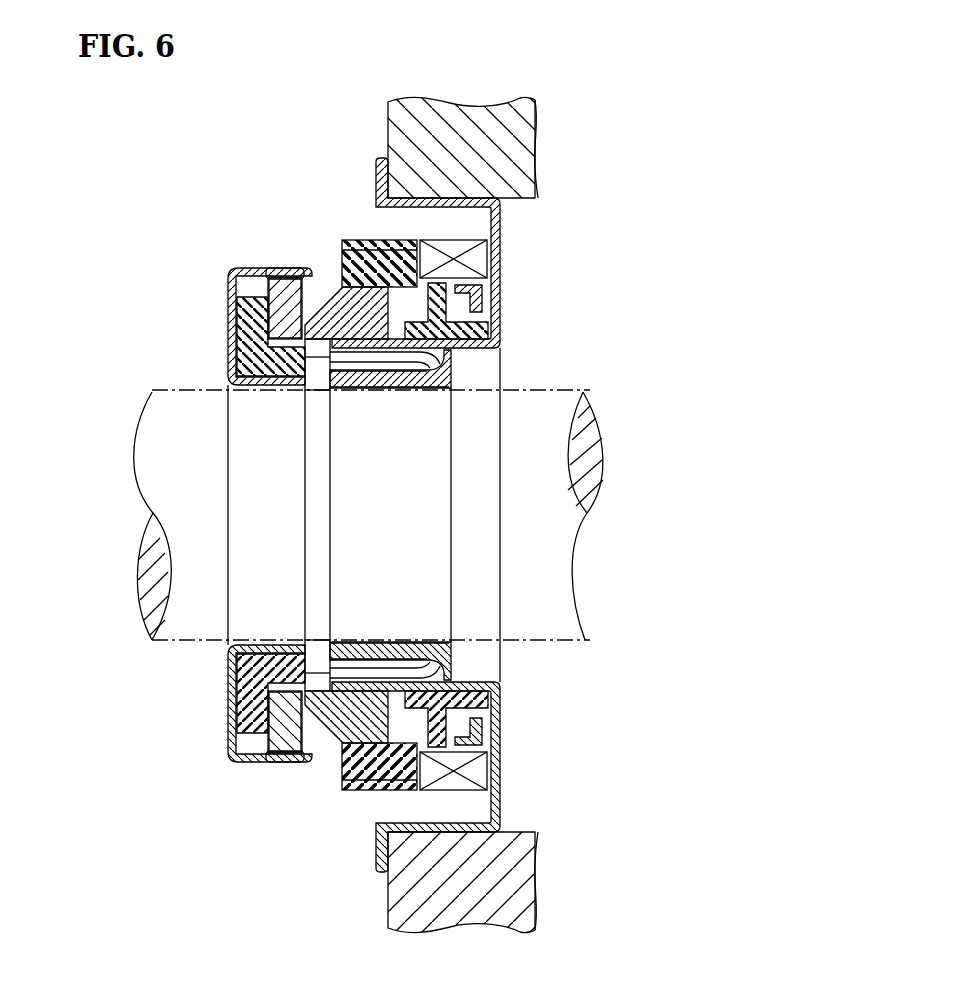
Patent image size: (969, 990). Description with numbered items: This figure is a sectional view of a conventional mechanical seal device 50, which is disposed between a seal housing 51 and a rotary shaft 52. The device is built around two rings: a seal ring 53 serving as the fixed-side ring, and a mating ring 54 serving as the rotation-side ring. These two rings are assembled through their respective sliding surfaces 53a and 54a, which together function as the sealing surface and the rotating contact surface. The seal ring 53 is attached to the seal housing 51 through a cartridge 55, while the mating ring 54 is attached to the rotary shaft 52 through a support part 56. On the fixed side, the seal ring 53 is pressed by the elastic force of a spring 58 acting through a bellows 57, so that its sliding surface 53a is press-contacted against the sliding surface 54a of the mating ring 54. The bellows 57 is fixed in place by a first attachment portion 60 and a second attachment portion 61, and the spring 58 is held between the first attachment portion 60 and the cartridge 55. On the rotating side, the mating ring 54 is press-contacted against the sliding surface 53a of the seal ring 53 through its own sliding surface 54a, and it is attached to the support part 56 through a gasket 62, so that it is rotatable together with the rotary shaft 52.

The mechanical seal device 50 is at (192, 241).
The seal housing 51 is at (528, 146).
The rotary shaft 52 is at (572, 570).
The seal ring 53 is at (322, 300).
The sliding surface 53a is at (300, 730).
The mating ring 54 is at (290, 292).
The sliding surface 54a is at (300, 772).
The cartridge 55 is at (500, 222).
The support part 56 is at (240, 296).
The bellows 57 is at (476, 330).
The spring 58 is at (483, 258).
The first attachment portion 60 is at (358, 242).
The second attachment portion 61 is at (480, 296).
The gasket 62 is at (247, 324).